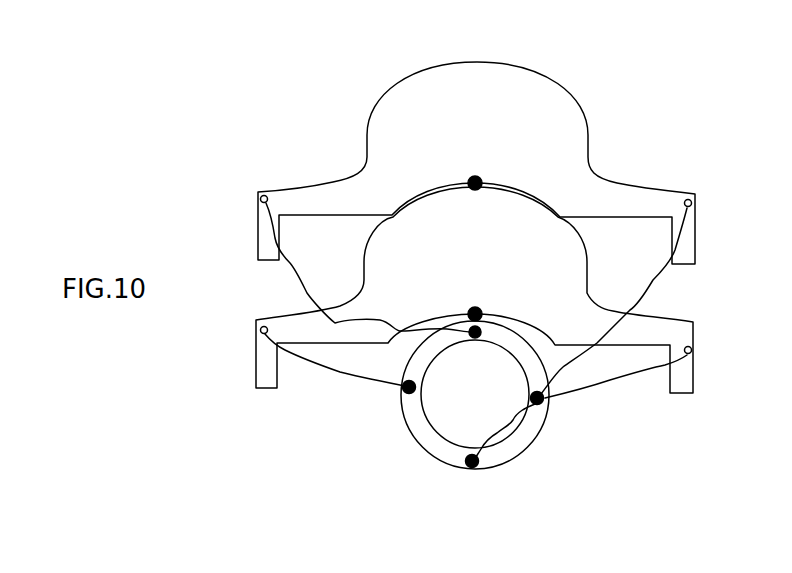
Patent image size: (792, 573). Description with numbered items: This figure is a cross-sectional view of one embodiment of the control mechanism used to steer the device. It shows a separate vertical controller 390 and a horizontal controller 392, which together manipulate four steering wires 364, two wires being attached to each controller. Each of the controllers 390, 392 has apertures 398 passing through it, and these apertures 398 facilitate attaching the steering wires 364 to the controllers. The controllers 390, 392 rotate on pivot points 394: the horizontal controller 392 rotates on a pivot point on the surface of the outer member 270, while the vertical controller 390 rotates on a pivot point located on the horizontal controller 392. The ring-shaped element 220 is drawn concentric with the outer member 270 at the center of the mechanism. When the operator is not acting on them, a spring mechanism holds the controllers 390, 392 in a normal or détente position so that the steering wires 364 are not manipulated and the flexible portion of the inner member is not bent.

The vertical controller 390 is at (575, 102).
The horizontal controller 392 is at (615, 217).
The pivot points 394 is at (479, 174).
The apertures 398 is at (260, 200).
The steering wires 364 is at (297, 276).
The outer ring 220 is at (513, 433).
The outer member 270 is at (517, 462).